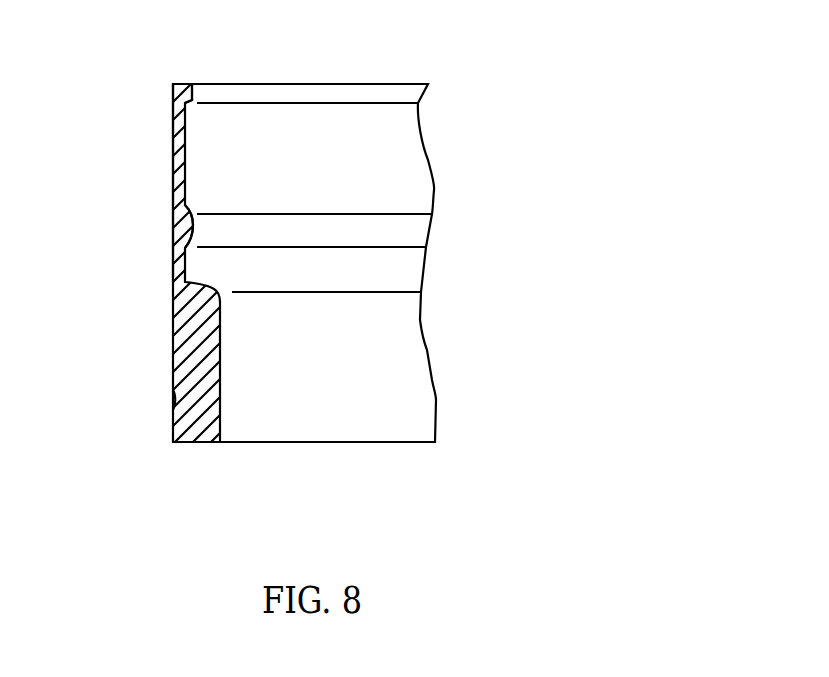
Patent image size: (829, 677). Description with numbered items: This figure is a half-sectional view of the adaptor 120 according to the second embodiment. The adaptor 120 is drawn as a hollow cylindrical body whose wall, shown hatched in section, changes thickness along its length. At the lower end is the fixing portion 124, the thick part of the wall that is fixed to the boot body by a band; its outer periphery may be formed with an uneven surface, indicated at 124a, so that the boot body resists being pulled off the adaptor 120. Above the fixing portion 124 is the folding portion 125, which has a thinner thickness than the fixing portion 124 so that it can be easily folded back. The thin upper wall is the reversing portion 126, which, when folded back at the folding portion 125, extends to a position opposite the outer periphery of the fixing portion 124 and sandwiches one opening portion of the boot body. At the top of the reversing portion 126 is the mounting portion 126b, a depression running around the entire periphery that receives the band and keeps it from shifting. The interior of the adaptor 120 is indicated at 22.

The adaptor 120 is at (363, 83).
The fixing portion 124 is at (197, 350).
The outer groove of wall portion 124a is at (175, 402).
The folding portion 125 is at (175, 262).
The reversing portion 126 is at (175, 141).
The mounting portion 126b is at (186, 158).
The bottom edge 22 is at (303, 414).